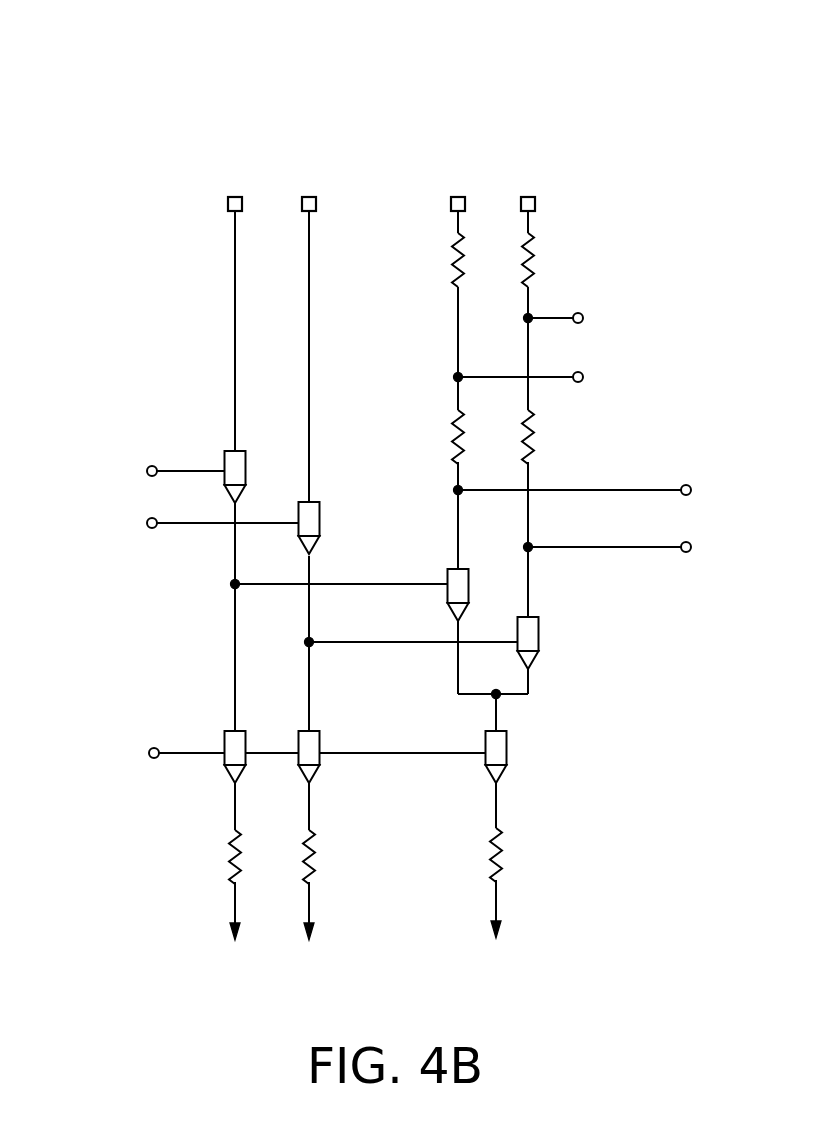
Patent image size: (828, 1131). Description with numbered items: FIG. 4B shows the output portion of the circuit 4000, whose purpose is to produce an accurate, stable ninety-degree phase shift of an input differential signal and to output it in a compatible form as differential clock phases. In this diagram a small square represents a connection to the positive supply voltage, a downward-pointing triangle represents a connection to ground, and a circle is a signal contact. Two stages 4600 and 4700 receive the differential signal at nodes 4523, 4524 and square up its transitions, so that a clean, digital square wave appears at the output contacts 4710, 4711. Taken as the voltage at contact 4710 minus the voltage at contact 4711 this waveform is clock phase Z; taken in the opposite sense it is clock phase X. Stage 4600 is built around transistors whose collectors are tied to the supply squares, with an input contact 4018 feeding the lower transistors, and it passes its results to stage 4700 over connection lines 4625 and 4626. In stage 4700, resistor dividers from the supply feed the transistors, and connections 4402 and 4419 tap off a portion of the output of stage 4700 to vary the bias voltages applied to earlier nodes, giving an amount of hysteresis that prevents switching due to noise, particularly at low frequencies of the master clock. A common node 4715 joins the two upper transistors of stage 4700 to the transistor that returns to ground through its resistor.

The circuit 4000 is at (420, 90).
The stage 4600 is at (264, 182).
The stage 4700 is at (492, 182).
The node 4523 is at (147, 471).
The node 4524 is at (147, 523).
The input terminal to Q20, Q21, Q17 4018 is at (153, 748).
The connection line to Q15 4625 is at (390, 583).
The connection line to Q16 4626 is at (385, 647).
The connection 4402 is at (580, 313).
The connection 4419 is at (580, 372).
The output contact 4710 is at (686, 485).
The output contact 4711 is at (688, 552).
The common node of Q15, Q16 to Q17 4715 is at (537, 692).